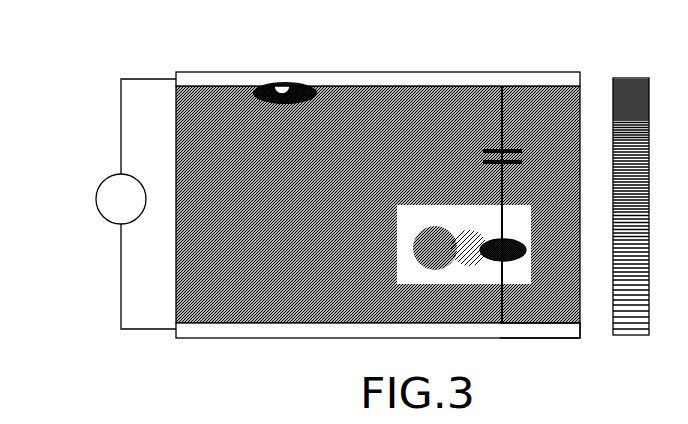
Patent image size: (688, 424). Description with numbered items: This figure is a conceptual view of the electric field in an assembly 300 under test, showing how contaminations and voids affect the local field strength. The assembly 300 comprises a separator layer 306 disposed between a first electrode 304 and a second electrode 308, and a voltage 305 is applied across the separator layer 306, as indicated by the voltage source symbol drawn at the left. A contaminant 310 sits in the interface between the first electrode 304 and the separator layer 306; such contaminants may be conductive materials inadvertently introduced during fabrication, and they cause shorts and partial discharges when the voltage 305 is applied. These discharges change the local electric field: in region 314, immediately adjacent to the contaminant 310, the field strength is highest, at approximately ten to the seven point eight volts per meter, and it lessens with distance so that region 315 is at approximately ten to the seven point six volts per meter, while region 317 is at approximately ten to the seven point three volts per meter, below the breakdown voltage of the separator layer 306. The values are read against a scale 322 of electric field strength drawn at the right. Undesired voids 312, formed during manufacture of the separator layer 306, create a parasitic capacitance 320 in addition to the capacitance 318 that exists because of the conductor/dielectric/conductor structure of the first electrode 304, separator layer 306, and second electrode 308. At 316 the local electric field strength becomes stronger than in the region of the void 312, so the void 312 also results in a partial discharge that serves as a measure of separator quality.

The assembly 300 is at (432, 43).
The first electrode 304 is at (197, 72).
The voltage 305 is at (96, 196).
The separator layer 306 is at (197, 292).
The second electrode 308 is at (556, 332).
The contaminant 310 is at (282, 86).
The void 312 is at (423, 268).
The region 314 is at (318, 92).
The region 315 is at (282, 112).
The local electric field strength location 316 is at (443, 222).
The region 317 is at (205, 172).
The capacitance 318 is at (522, 158).
The parasitic capacitance 320 is at (526, 248).
The scale 322 is at (633, 77).